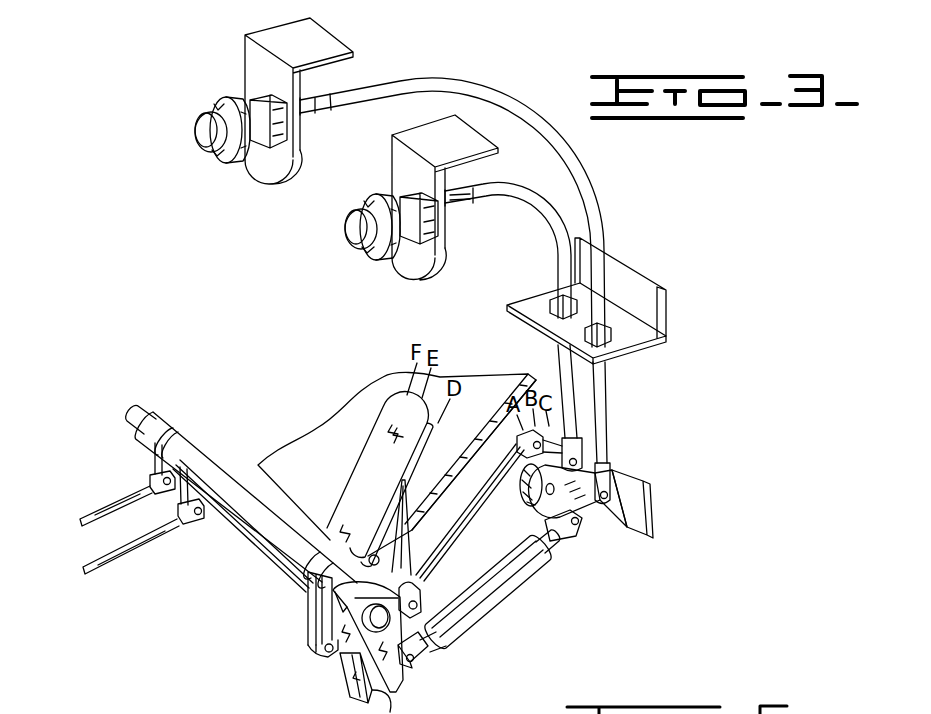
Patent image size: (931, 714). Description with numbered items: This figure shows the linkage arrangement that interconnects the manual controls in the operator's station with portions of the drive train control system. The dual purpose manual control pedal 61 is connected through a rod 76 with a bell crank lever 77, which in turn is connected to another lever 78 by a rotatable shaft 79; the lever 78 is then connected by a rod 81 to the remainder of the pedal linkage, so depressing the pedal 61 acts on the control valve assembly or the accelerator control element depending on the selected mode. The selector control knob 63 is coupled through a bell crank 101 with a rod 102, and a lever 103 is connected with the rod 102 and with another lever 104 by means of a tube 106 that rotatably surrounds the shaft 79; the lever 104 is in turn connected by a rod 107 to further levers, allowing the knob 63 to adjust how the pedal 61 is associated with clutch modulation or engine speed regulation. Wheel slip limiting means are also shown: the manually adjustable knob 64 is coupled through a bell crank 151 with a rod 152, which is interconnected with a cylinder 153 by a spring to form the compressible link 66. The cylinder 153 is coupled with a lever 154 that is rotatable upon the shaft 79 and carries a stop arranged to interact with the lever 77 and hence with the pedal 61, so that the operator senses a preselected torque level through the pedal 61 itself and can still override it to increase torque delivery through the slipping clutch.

The manual control pedal 61 is at (371, 452).
The selector control knob 63 is at (356, 238).
The manually adjustable knob 64 is at (210, 128).
The compressible link 66 is at (497, 614).
The rod 76 is at (414, 580).
The bell crank lever 77 is at (400, 690).
The lever 78 is at (152, 462).
The rotatable shaft 79 is at (133, 404).
The rod 81 is at (108, 498).
The bell crank 101 is at (522, 490).
The rod 102 is at (462, 520).
The lever 103 is at (308, 616).
The lever 104 is at (180, 501).
The tube 106 is at (257, 534).
The rod 107 is at (100, 562).
The bell crank 151 is at (584, 517).
The rod 152 is at (551, 548).
The cylinder 153 is at (446, 644).
The lever 154 is at (344, 660).